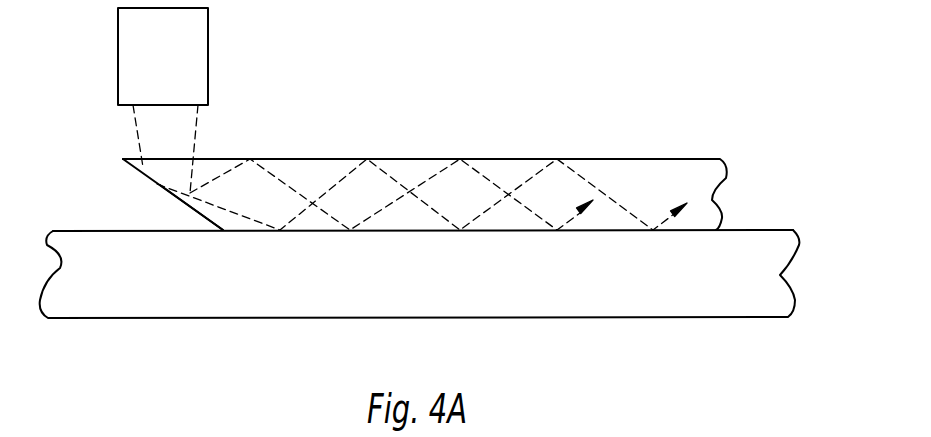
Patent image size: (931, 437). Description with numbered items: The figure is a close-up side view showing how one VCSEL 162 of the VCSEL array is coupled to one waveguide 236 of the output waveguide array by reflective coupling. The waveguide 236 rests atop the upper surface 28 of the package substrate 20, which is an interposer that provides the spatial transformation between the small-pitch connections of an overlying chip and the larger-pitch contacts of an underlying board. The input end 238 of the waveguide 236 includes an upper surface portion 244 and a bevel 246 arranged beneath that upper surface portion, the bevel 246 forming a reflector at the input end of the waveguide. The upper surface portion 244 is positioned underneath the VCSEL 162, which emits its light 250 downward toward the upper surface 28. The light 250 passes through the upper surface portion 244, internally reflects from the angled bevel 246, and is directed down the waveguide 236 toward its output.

The VCSEL 162 is at (195, 38).
The waveguide 236 is at (518, 158).
The upper surface portion 244 is at (118, 140).
The input end 238 is at (160, 185).
The bevel 246 is at (180, 202).
The light 250 is at (135, 120).
The upper surface 28 is at (747, 210).
The package substrate 20 is at (767, 270).